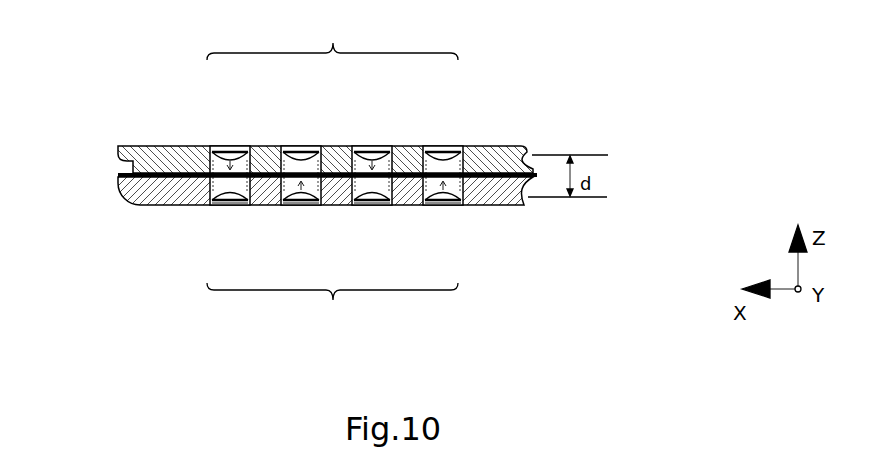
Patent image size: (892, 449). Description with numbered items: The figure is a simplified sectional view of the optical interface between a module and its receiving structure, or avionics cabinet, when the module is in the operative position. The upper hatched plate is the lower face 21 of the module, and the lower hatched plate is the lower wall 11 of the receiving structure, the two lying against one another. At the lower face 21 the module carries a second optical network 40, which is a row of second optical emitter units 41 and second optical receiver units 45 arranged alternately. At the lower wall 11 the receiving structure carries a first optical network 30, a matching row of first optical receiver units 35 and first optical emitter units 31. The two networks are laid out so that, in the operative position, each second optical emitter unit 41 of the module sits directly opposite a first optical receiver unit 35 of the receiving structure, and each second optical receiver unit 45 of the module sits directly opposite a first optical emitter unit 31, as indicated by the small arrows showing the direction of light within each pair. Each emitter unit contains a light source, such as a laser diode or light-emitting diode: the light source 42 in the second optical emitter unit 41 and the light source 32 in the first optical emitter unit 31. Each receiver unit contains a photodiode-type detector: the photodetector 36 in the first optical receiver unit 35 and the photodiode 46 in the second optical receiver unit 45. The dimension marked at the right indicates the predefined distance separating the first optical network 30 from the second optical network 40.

The lower wall 11 is at (148, 195).
The lower face 21 is at (150, 150).
The first optical network 30 is at (332, 311).
The first optical emitter unit 31 is at (300, 227).
The light source 32 is at (458, 197).
The first optical receiver unit 35 is at (228, 227).
The photodetector 36 is at (218, 198).
The second optical network 40 is at (332, 38).
The second optical emitter unit 41 is at (228, 124).
The light source 42 is at (223, 157).
The second optical receiver unit 45 is at (300, 124).
The photodiode 46 is at (458, 155).